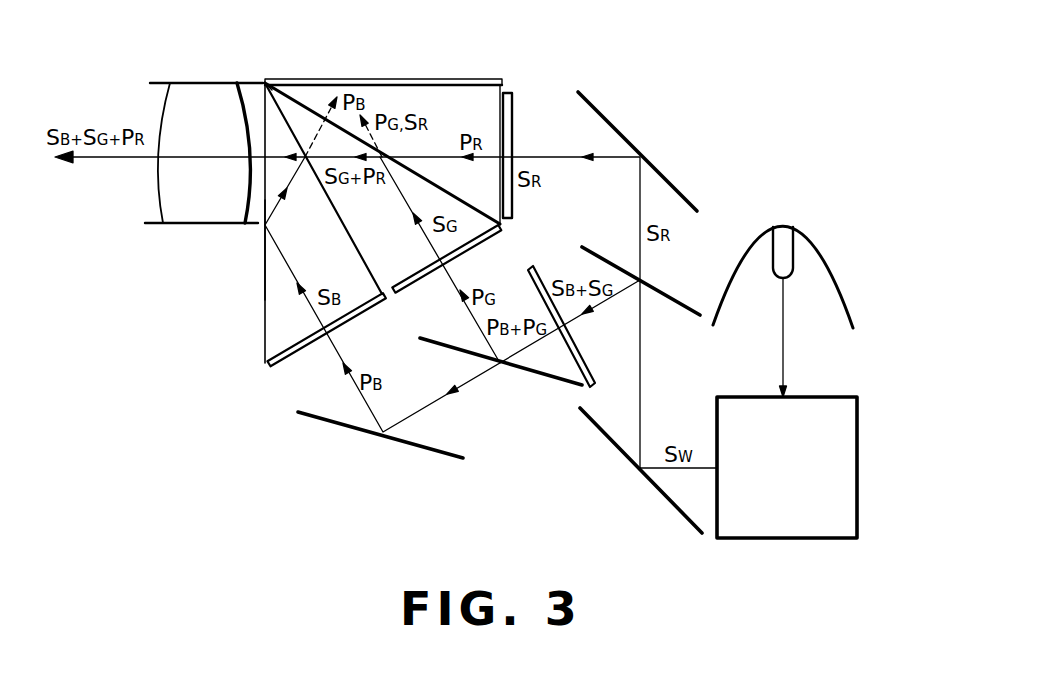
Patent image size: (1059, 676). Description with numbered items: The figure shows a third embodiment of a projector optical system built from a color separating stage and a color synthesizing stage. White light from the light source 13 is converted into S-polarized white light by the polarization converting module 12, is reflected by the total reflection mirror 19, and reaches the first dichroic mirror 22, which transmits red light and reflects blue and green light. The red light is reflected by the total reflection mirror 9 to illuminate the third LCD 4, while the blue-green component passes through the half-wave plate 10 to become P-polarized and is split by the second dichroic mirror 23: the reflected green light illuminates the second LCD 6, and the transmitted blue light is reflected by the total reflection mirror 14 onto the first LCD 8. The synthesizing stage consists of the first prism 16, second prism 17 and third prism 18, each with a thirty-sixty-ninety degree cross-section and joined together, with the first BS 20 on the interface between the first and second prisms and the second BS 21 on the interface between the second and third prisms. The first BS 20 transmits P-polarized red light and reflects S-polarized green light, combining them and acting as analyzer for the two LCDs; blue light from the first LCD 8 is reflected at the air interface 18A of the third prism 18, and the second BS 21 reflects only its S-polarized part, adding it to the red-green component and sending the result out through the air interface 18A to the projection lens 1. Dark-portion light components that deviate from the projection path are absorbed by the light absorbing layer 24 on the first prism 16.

The projection lens 1 is at (186, 214).
The third LCD 4 is at (513, 127).
The second LCD 6 is at (495, 231).
The first LCD 8 is at (272, 367).
The total reflection mirror 9 is at (624, 137).
The λ/2 plate 10 is at (585, 366).
The polarization converting module 12 is at (811, 539).
The light source 13 is at (832, 265).
The total reflection mirror 14 is at (338, 424).
The first prism 16 is at (447, 97).
The second prism 17 is at (304, 122).
The third prism 18 is at (276, 313).
The air interface 18A is at (266, 282).
The total reflection mirror 19 is at (604, 437).
The first BS 20 is at (298, 84).
The second BS 21 is at (264, 92).
The first dichroic mirror 22 is at (688, 312).
The second dichroic mirror 23 is at (517, 370).
The light absorbing layer 24 is at (502, 80).